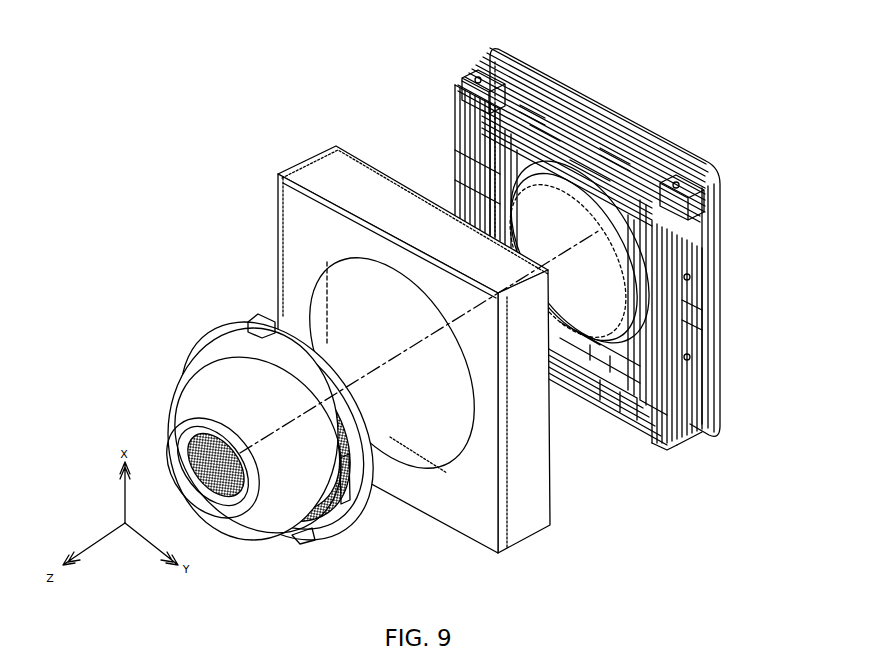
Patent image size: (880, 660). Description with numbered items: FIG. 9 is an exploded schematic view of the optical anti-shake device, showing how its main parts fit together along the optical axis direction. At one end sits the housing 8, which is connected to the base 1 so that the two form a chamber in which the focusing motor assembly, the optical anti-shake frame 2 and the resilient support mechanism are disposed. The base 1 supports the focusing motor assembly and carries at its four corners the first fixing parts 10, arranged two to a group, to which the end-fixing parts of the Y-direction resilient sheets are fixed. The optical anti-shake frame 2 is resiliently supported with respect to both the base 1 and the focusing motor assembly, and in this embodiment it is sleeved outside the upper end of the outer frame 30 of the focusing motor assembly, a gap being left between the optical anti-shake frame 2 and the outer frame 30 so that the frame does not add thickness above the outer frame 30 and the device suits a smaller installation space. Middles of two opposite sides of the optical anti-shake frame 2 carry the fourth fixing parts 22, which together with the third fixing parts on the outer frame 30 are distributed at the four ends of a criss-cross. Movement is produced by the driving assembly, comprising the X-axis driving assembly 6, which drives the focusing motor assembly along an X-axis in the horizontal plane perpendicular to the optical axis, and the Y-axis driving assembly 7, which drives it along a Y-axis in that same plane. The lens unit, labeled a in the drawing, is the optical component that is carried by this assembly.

The base 1 is at (616, 115).
The optical anti-shake frame 2 is at (673, 293).
The X-axis driving assembly 6 is at (700, 342).
The Y-axis driving assembly 7 is at (563, 83).
The housing 8 is at (537, 515).
The first fixing part 10 is at (478, 72).
The fourth fixing part 22 is at (697, 259).
The outer frame 30 is at (456, 138).
The lens unit a is at (193, 388).